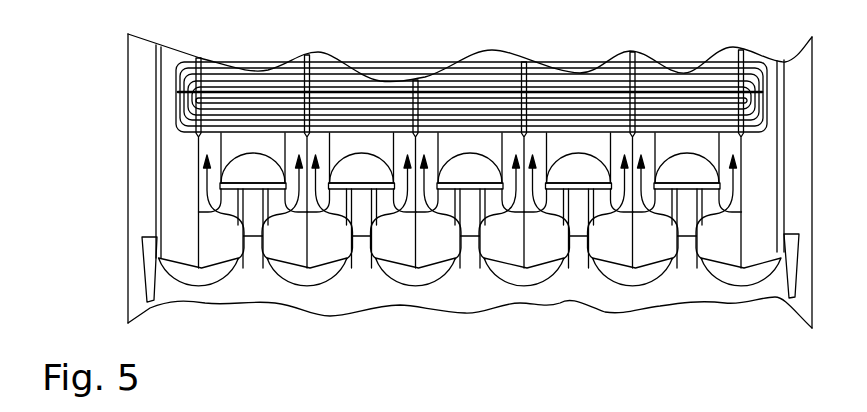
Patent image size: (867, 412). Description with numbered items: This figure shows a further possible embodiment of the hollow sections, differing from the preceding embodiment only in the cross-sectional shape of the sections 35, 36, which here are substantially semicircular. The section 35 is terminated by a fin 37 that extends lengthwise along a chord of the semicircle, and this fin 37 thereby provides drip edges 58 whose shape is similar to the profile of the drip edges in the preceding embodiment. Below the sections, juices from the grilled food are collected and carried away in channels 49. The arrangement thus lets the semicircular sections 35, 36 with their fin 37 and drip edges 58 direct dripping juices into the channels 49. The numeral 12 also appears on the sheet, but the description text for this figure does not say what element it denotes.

The heat exchanger tube bundle 12 is at (177, 82).
The section 35 is at (225, 172).
The section 36 is at (287, 276).
The fin 37 is at (360, 188).
The channels 49 is at (417, 253).
The drip edges 58 is at (515, 195).